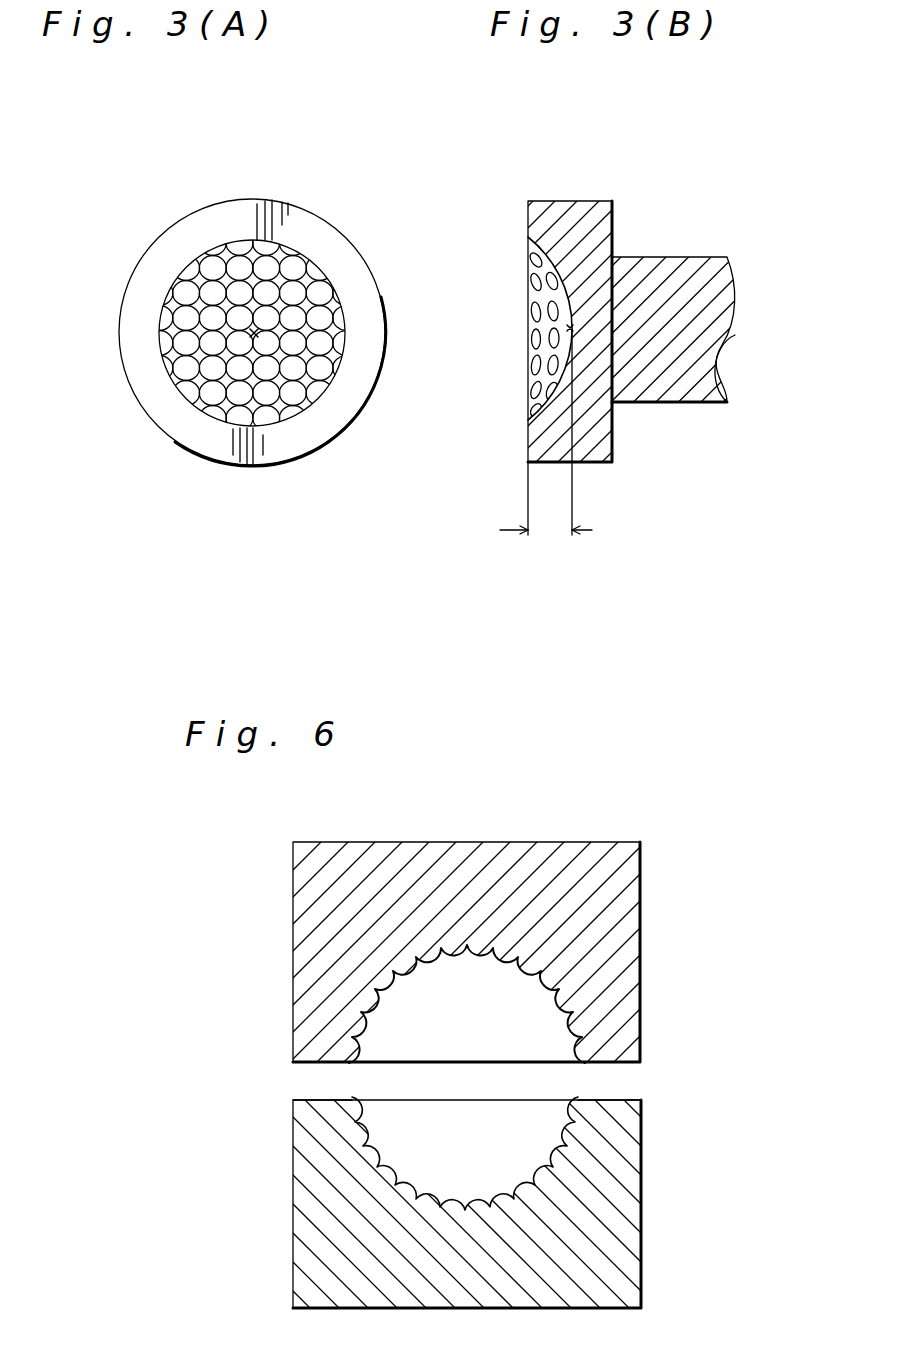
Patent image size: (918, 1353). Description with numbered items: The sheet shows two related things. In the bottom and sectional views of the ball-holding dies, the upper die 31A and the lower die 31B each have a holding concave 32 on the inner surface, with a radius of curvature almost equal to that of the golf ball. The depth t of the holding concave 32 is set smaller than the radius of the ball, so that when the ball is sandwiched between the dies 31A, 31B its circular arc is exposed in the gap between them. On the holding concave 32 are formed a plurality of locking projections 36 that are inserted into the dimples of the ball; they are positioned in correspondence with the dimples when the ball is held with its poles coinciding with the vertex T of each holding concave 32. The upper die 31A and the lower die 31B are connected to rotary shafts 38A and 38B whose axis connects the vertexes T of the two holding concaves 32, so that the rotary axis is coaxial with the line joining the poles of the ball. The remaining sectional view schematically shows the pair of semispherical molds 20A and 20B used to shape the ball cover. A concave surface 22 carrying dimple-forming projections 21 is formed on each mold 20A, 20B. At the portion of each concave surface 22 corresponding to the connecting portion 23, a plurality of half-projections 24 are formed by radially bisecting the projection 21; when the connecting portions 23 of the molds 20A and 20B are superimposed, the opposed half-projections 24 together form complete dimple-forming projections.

In FIG. 3A, the upper die 31A is at (226, 315).
In FIG. 3B, the upper die 31A is at (639, 299).
In FIG. 3A, the lower die 31B is at (212, 190).
In FIG. 3B, the lower die 31B is at (572, 201).
In FIG. 3A, the holding concave 32 is at (200, 388).
In FIG. 3B, the holding concave 32 is at (537, 262).
In FIG. 3A, the locking projections 36 is at (298, 268).
In FIG. 3B, the locking projections 36 is at (530, 410).
In FIG. 3A, the vertex of the holding concave T is at (262, 333).
In FIG. 3B, the vertex of the holding concave T is at (592, 298).
In FIG. 3B, the rotary shaft 38A is at (713, 372).
In FIG. 3B, the rotary shaft 38B is at (688, 403).
In FIG. 3B, the depth of the holding concave t is at (549, 432).
In FIG. 6, the semispherical mold 20A is at (628, 936).
In FIG. 6, the semispherical mold 20B is at (637, 1127).
In FIG. 6, the dimple-forming projections 21 is at (570, 1005).
In FIG. 6, the concave surface 22 is at (529, 1073).
In FIG. 6, the connecting portion 23 is at (313, 1072).
In FIG. 6, the half-projections 24 is at (590, 1061).